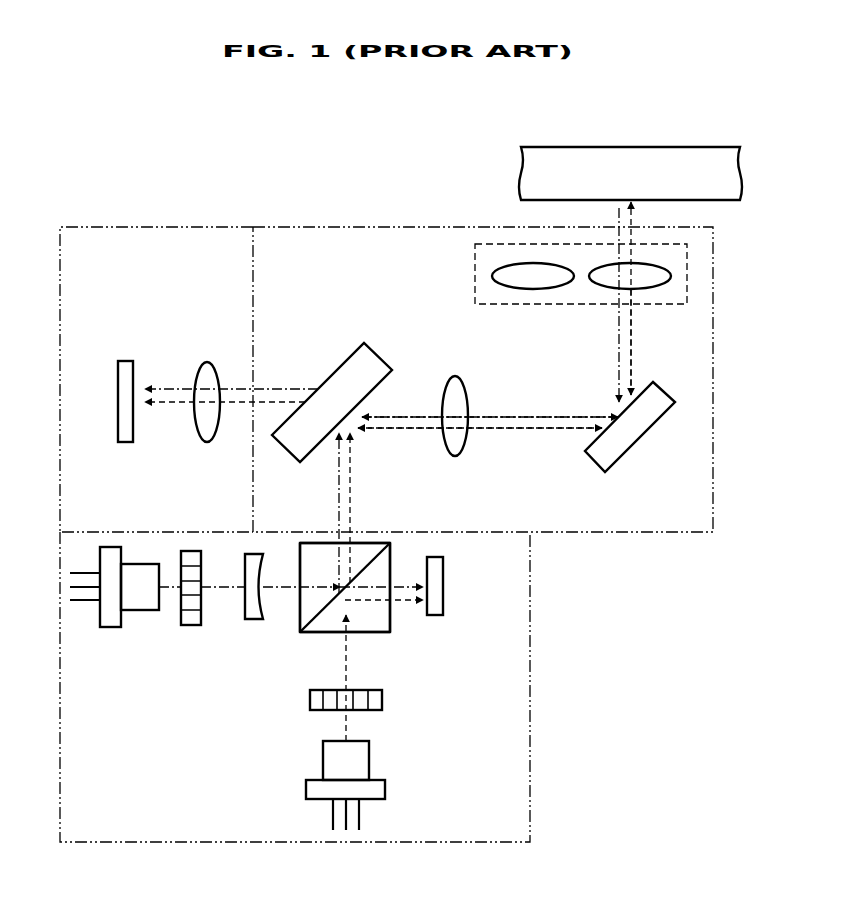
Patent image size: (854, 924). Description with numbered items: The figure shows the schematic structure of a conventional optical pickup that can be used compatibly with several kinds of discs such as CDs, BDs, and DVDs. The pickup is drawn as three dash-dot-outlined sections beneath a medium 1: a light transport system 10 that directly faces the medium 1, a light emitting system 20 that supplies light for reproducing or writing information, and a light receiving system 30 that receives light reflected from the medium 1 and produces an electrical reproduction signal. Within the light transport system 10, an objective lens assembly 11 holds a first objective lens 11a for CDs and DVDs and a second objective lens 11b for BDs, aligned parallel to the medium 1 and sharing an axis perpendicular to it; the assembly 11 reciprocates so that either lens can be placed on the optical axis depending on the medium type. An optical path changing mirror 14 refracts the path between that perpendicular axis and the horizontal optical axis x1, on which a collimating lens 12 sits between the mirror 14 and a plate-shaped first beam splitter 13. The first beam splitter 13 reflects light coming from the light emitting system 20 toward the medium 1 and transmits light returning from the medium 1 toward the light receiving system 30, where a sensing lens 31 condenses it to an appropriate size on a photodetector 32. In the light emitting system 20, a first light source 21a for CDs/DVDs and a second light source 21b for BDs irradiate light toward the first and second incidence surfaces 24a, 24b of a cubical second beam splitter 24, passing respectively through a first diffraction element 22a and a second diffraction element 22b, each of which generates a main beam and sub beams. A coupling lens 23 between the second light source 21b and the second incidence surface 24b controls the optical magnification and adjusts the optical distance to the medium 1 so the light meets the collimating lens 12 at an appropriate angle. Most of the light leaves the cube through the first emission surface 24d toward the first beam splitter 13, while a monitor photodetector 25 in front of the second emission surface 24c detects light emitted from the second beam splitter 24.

The medium 1 is at (519, 171).
The light transport system 10 is at (331, 227).
The objective lens assembly 11 is at (472, 272).
The first objective lens 11a is at (531, 290).
The second objective lens 11b is at (652, 290).
The collimating lens 12 is at (455, 376).
The first beam splitter 13 is at (348, 366).
The optical path changing mirror 14 is at (636, 432).
The optical axis x1 is at (520, 430).
The light emitting system 20 is at (294, 845).
The first light source 21a is at (387, 790).
The second light source 21b is at (108, 630).
The first diffraction element 22a is at (384, 700).
The second diffraction element 22b is at (191, 628).
The coupling lens 23 is at (254, 622).
The second beam splitter 24 is at (296, 638).
The first incidence surface 24a is at (375, 633).
The second incidence surface 24b is at (300, 560).
The second emission surface 24c is at (391, 617).
The first emission surface 24d is at (375, 543).
The monitor photodetector 25 is at (446, 587).
The light receiving system 30 is at (153, 227).
The sensing lens 31 is at (207, 362).
The photodetector 32 is at (125, 361).